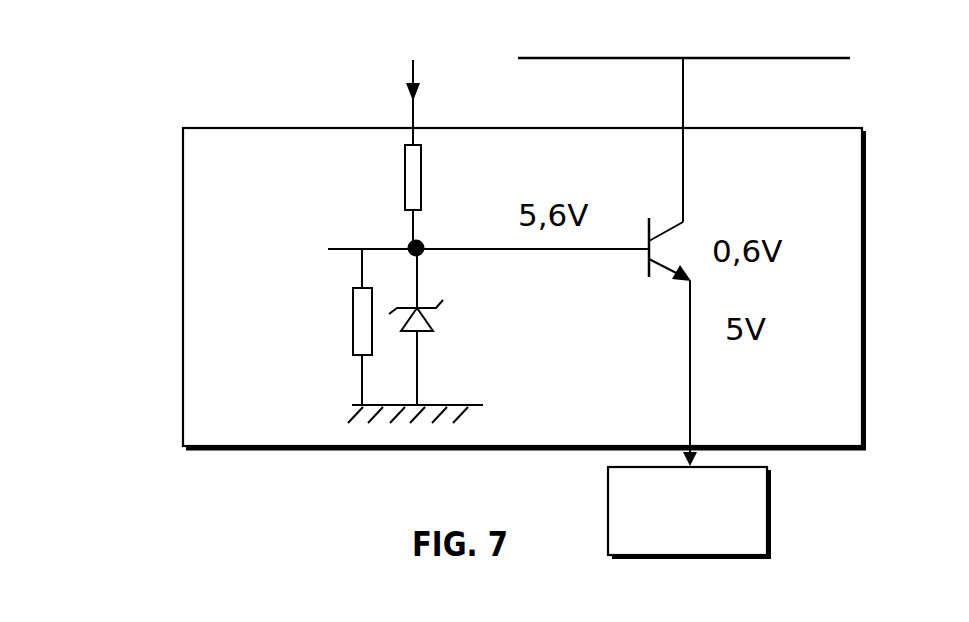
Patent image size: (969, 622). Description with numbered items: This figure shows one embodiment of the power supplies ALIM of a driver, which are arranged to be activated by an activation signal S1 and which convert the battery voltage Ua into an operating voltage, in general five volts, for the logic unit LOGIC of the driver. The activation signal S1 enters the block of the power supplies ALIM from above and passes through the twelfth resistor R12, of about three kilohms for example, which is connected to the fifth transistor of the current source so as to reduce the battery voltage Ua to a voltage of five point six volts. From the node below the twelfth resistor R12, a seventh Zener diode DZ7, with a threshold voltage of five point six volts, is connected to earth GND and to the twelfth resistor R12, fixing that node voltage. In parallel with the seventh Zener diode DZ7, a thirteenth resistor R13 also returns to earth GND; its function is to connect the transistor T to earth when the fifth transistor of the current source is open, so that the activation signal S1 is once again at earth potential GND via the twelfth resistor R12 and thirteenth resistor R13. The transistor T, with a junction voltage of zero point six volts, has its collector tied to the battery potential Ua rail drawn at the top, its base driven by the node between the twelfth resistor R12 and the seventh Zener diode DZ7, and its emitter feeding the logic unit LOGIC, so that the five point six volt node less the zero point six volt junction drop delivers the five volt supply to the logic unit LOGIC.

The power supplies ALIM is at (182, 222).
The activation signal S1 is at (403, 75).
The twelfth resistor R12 is at (457, 197).
The thirteenth resistor R13 is at (314, 327).
The seventh Zener diode DZ7 is at (465, 327).
The earth potential GND is at (361, 407).
The battery voltage Ua is at (684, 30).
The transistor T is at (664, 262).
The logic unit LOGIC is at (689, 513).